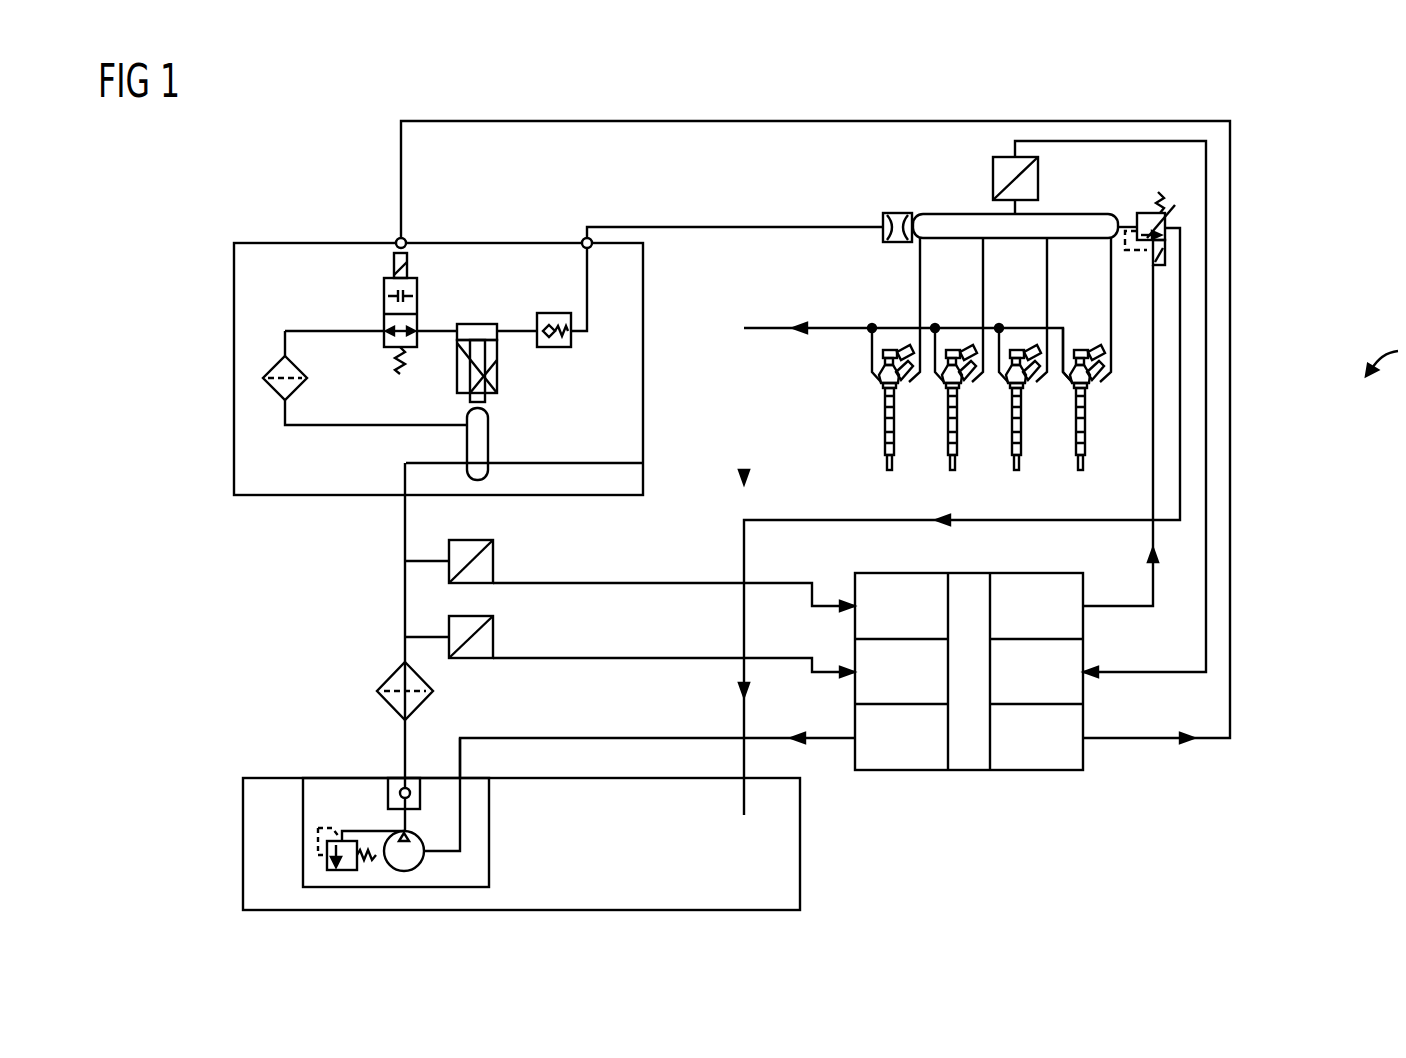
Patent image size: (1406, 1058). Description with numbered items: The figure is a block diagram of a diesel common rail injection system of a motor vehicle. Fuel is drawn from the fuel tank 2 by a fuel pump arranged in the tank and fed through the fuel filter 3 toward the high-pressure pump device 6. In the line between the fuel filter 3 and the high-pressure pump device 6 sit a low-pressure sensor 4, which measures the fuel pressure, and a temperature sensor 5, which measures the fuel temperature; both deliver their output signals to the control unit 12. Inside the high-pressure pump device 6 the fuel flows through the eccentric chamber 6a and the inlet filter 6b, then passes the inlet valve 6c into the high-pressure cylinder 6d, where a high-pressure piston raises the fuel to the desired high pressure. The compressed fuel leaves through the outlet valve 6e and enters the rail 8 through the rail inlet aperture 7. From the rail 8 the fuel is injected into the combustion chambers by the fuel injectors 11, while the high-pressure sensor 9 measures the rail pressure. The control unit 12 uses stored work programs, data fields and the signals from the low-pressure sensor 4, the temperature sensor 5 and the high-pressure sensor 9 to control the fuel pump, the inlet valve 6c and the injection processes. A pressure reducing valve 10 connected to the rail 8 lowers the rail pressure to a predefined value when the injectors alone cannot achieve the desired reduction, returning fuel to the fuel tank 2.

The fuel tank 2 is at (788, 853).
The fuel filter 3 is at (398, 702).
The low-pressure sensor 4 is at (493, 553).
The temperature sensor 5 is at (493, 630).
The high-pressure pump device 6 is at (254, 243).
The eccentric chamber 6a is at (488, 429).
The inlet filter 6b is at (275, 372).
The inlet valve 6c is at (384, 305).
The high-pressure cylinder 6d is at (478, 324).
The outlet valve 6e is at (553, 313).
The rail inlet aperture 7 is at (898, 213).
The rail 8 is at (952, 214).
The high-pressure sensor 9 is at (996, 157).
The pressure reducing valve 10 is at (1172, 212).
The fuel injectors 11 is at (852, 418).
The control unit 12 is at (1040, 760).